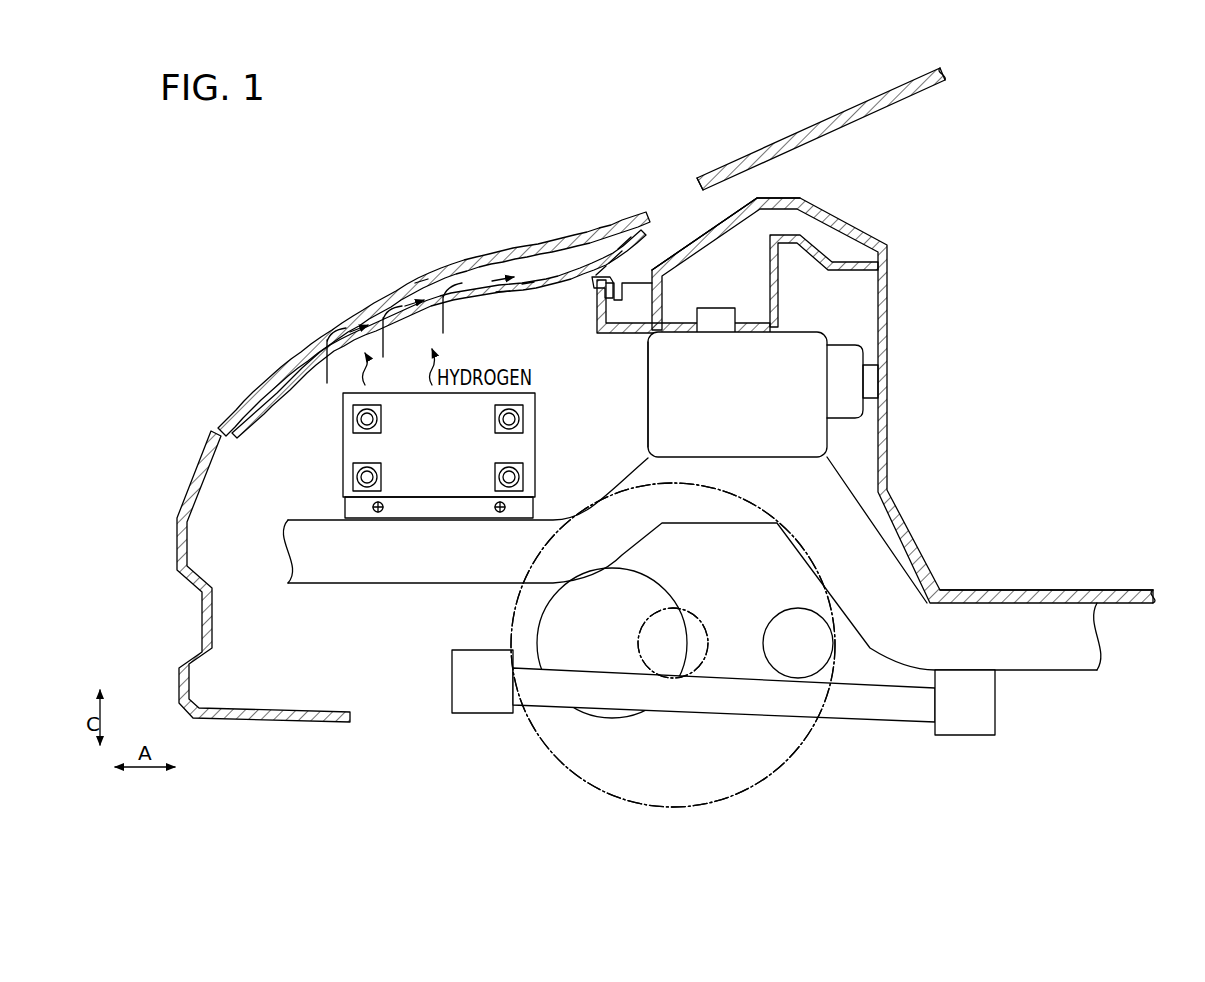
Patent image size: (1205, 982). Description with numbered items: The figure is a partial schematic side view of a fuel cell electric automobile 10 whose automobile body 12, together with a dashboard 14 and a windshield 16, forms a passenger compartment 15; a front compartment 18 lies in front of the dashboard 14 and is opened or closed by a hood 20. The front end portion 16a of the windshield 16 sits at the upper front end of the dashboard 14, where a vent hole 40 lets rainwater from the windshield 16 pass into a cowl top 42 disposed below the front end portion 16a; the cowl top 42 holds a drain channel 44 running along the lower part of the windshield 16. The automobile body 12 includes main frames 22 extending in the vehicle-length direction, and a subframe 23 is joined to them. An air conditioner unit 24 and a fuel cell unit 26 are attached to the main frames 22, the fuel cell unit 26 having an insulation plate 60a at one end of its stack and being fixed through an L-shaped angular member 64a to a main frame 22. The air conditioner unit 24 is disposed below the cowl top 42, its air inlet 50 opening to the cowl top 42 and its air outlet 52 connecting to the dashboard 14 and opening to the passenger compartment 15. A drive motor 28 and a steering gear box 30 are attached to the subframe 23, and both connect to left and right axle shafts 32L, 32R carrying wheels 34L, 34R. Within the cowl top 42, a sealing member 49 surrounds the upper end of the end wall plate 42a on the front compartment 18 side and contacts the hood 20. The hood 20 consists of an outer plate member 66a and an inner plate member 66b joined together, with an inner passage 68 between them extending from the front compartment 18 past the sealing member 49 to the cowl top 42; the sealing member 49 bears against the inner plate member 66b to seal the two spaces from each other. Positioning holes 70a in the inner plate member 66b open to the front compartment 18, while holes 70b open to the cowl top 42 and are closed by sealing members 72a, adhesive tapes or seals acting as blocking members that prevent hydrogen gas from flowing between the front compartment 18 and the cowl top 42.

The fuel cell electric automobile 10 is at (386, 208).
The automobile body 12 is at (283, 334).
The dashboard 14 is at (888, 284).
The passenger compartment 15 is at (1018, 575).
The windshield 16 is at (834, 125).
The front end portion of the windshield 16a is at (697, 185).
The front compartment 18 is at (481, 318).
The hood 20 is at (345, 312).
The main frames 22 is at (362, 574).
The subframe 23 is at (898, 715).
The air conditioner unit 24 is at (646, 406).
The fuel cell unit 26 is at (407, 455).
The drive motor 28 is at (553, 620).
The steering gear box 30 is at (780, 628).
The left axle shaft 32L is at (700, 620).
The right axle shaft 32R is at (700, 620).
The left wheel 34L is at (806, 745).
The right wheel 34R is at (806, 745).
The vent hole 40 is at (678, 257).
The cowl top 42 is at (720, 205).
The end wall plate 42a is at (594, 332).
The drain channel 44 is at (762, 317).
The sealing member 49 is at (592, 287).
The air inlet 50 is at (715, 310).
The air outlet 52 is at (804, 345).
The insulation plate 60a is at (352, 454).
The angular member 64a is at (437, 502).
The outer plate member 66a is at (422, 280).
The inner plate member 66b is at (503, 292).
The inner passage 68 is at (528, 284).
The holes 70a is at (326, 350).
The holes 70b is at (633, 298).
The sealing members 72a is at (632, 305).